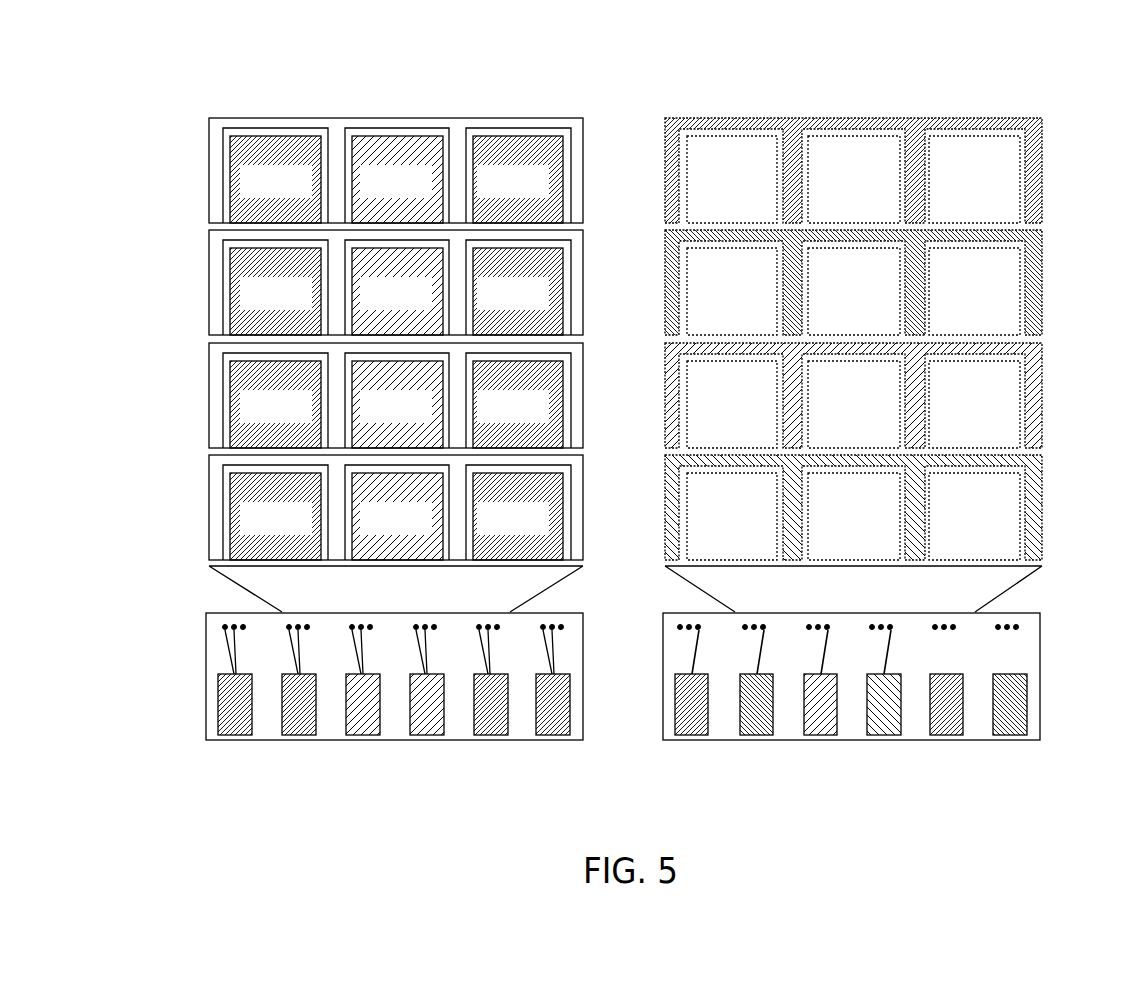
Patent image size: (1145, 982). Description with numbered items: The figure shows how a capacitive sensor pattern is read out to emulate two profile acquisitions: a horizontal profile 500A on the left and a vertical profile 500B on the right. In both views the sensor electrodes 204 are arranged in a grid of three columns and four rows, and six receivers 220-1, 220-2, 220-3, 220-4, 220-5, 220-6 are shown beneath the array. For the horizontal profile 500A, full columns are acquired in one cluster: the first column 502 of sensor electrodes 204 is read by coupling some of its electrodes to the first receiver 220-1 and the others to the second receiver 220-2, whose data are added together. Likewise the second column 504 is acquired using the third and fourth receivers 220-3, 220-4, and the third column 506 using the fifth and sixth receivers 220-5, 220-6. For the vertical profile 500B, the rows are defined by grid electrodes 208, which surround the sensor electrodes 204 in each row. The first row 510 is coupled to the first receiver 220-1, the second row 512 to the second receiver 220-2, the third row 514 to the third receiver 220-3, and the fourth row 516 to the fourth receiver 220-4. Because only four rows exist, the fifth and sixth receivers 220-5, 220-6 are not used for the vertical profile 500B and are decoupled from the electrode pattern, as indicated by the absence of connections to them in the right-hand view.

The horizontal profile 500A is at (203, 88).
The vertical profile 500B is at (688, 98).
The first column 502 is at (325, 107).
The second column 504 is at (445, 107).
The third column 506 is at (565, 107).
The first row 510 is at (1087, 176).
The second row 512 is at (1087, 288).
The third row 514 is at (1087, 401).
The fourth row 516 is at (1087, 513).
The sensor electrode 204 is at (996, 530).
The grid electrode 208 is at (868, 519).
The first receiver 220-1 is at (464, 733).
The second receiver 220-2 is at (529, 733).
The third receiver 220-3 is at (592, 733).
The fourth receiver 220-4 is at (655, 733).
The fifth receiver 220-5 is at (719, 733).
The sixth receiver 220-6 is at (782, 733).